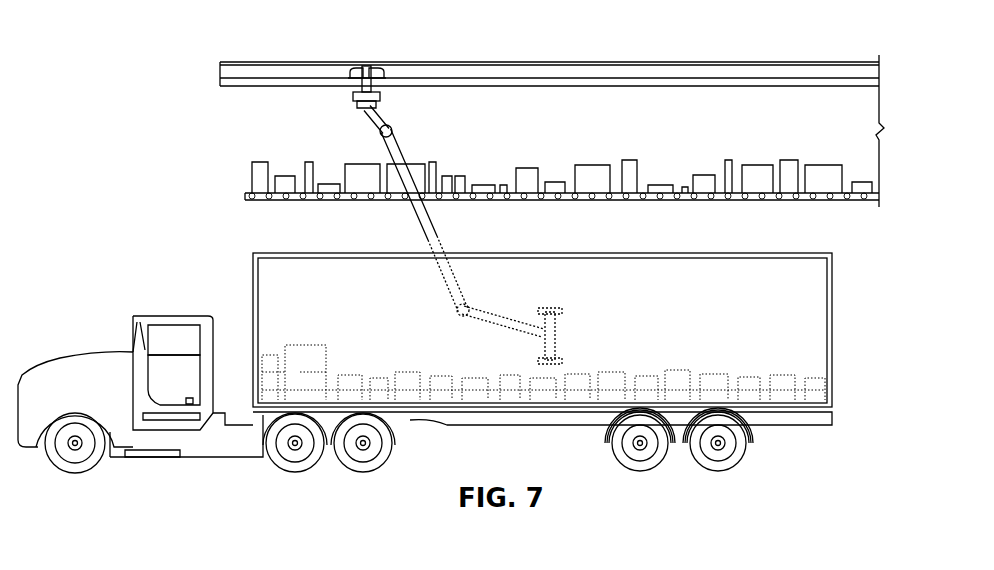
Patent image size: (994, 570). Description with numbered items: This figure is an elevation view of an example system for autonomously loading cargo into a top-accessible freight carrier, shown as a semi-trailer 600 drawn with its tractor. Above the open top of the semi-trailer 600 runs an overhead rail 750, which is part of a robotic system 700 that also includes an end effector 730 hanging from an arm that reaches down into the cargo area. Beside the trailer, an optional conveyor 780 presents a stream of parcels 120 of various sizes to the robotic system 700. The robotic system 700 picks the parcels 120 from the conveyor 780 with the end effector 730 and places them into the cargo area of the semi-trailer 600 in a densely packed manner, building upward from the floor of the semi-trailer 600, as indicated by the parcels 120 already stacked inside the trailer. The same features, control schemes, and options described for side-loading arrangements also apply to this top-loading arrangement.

The overhead rail 750 is at (220, 82).
The robotic system 700 is at (292, 110).
The parcels 120 is at (414, 160).
The semi-trailer 600 is at (242, 282).
The end effector 730 is at (553, 310).
The conveyor 780 is at (465, 202).